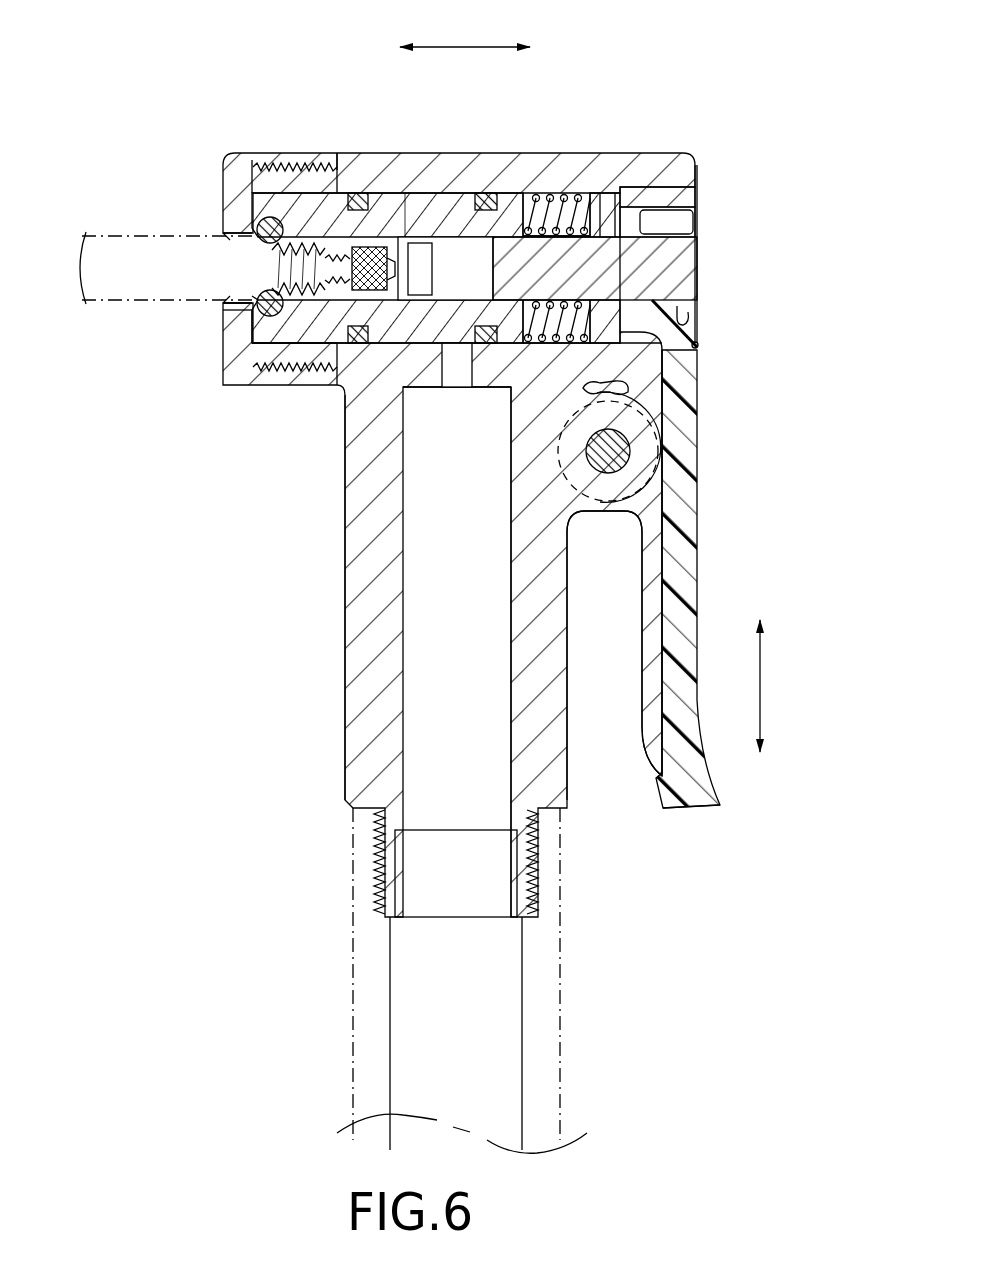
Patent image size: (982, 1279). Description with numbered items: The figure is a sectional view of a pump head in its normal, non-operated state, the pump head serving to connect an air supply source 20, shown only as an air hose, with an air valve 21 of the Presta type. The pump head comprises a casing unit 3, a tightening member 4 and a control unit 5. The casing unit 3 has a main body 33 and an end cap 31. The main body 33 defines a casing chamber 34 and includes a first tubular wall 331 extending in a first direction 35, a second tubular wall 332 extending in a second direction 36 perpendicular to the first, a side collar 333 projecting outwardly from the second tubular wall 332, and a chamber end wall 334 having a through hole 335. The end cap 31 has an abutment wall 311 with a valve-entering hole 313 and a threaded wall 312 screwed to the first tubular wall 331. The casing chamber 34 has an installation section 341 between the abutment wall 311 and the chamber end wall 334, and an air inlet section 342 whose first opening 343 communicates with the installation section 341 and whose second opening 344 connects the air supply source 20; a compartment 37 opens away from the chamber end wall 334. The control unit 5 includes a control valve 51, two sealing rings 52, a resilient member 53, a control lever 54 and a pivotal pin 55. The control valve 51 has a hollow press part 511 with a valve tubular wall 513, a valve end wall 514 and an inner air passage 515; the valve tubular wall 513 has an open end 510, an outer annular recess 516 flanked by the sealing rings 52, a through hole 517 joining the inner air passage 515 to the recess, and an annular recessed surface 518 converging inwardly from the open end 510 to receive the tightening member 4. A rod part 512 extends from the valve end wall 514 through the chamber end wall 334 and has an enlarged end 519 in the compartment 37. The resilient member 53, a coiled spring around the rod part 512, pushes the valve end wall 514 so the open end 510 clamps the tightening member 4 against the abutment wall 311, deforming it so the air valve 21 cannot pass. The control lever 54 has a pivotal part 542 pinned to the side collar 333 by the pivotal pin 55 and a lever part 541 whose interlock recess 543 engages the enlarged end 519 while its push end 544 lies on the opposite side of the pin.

The casing unit 3 is at (323, 663).
The tightening member 4 is at (258, 228).
The control unit 5 is at (716, 243).
The air supply source 20 is at (565, 950).
The air valve 21 is at (150, 252).
The end cap 31 is at (227, 387).
The main body 33 is at (343, 587).
The casing chamber 34 is at (440, 795).
The first direction 35 is at (465, 29).
The second direction 36 is at (782, 686).
The compartment 37 is at (695, 166).
The control valve 51 is at (330, 213).
The sealing rings 52 is at (477, 202).
The resilient member 53 is at (597, 207).
The control lever 54 is at (702, 556).
The pivotal pin 55 is at (614, 460).
The abutment wall 311 is at (228, 356).
The threaded wall 312 is at (290, 360).
The valve-entering hole 313 is at (258, 316).
The first tubular wall 331 is at (460, 172).
The second tubular wall 332 is at (540, 700).
The side collar 333 is at (647, 456).
The chamber end wall 334 is at (610, 205).
The through hole 335 is at (625, 345).
The installation section 341 is at (580, 210).
The air inlet section 342 is at (437, 541).
The first opening 343 is at (450, 393).
The second opening 344 is at (430, 890).
The open end 510 is at (240, 345).
The hollow press part 511 is at (295, 269).
The rod part 512 is at (617, 263).
The valve tubular wall 513 is at (307, 323).
The valve end wall 514 is at (508, 240).
The inner air passage 515 is at (448, 263).
The outer annular recess 516 is at (413, 210).
The through hole 517 is at (297, 372).
The annular recessed surface 518 is at (258, 180).
The enlarged end 519 is at (700, 230).
The lever part 541 is at (680, 420).
The pivotal part 542 is at (620, 507).
The interlock recess 543 is at (688, 317).
The push end 544 is at (692, 797).